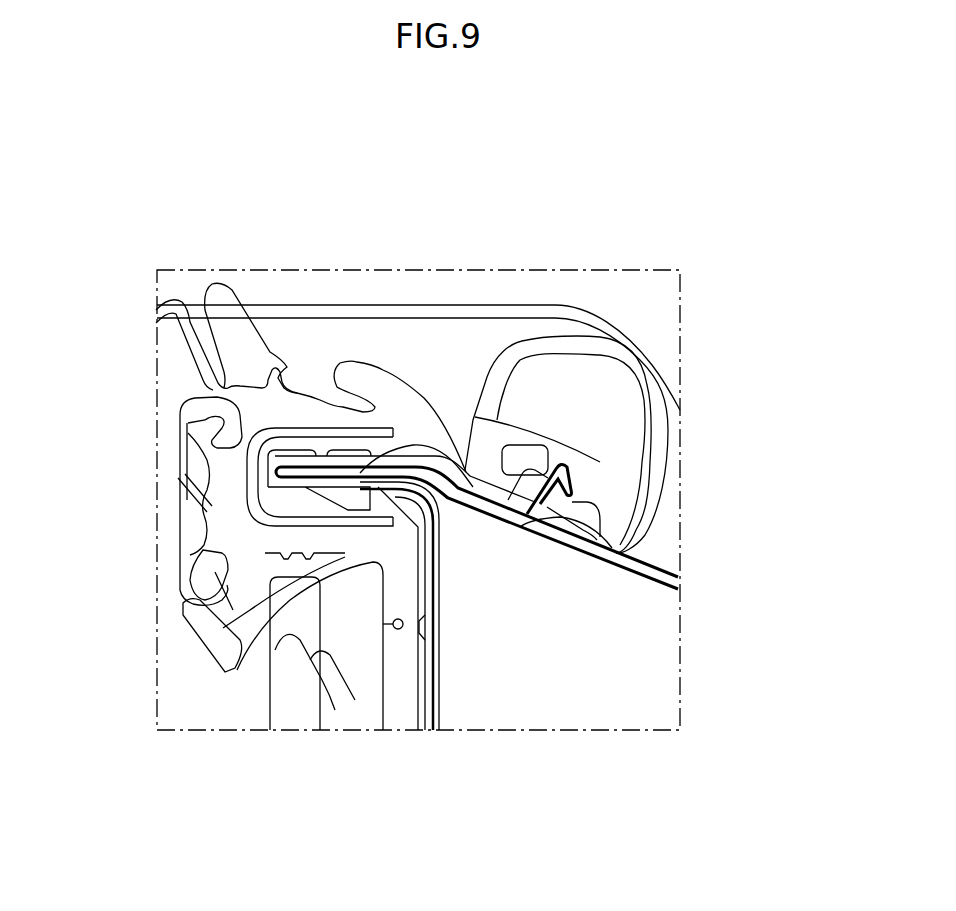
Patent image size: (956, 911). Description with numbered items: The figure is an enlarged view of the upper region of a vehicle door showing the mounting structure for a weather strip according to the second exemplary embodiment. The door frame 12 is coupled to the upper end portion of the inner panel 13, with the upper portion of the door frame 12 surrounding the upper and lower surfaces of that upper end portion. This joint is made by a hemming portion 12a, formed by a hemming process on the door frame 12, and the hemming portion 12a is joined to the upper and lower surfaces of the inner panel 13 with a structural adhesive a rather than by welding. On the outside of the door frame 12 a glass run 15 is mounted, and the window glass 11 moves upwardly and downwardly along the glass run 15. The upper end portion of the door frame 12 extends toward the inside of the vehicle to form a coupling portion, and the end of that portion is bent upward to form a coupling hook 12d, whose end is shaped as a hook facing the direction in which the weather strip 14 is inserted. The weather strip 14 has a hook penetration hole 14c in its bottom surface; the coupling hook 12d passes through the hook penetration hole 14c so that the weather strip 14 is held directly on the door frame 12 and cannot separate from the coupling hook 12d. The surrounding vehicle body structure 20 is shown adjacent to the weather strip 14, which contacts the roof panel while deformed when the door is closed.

The vehicle body panel 20 is at (422, 315).
The weather strip 14 is at (653, 448).
The hook penetration hole 14c is at (548, 518).
The inner panel 13 is at (640, 570).
The door frame 12 is at (433, 668).
The hemming portion 12a is at (277, 483).
The coupling hook 12d is at (517, 482).
The window glass 11 is at (286, 696).
The glass run 15 is at (348, 685).
The structural adhesive a is at (337, 475).